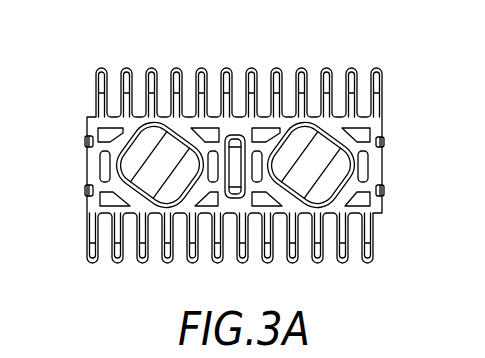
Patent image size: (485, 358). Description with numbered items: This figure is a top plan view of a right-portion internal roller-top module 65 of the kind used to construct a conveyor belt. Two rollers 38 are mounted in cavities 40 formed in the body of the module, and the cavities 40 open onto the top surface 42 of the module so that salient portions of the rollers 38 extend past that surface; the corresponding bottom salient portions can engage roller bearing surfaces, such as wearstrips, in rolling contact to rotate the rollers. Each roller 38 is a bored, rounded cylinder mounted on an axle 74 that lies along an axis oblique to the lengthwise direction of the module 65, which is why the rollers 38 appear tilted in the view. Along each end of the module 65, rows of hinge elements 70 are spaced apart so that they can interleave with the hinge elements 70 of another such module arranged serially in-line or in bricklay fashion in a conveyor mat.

The roller 38 is at (168, 153).
The cavity 40 is at (299, 127).
The top surface 42 is at (88, 205).
The right-portion internal roller-top module 65 is at (372, 124).
The hinge element 70 is at (123, 251).
The axle 74 is at (123, 152).